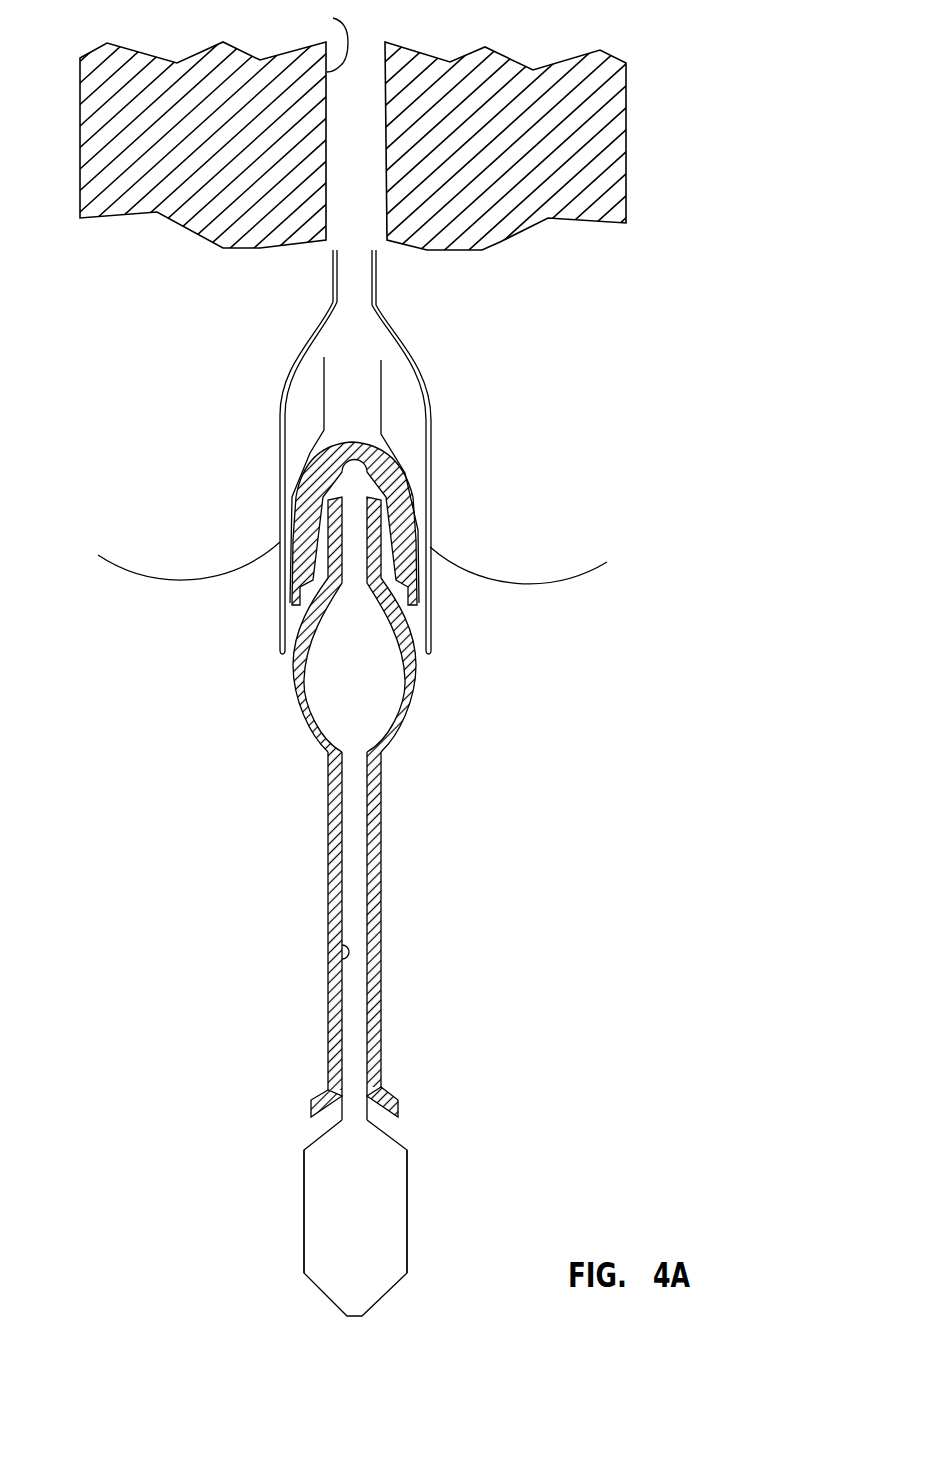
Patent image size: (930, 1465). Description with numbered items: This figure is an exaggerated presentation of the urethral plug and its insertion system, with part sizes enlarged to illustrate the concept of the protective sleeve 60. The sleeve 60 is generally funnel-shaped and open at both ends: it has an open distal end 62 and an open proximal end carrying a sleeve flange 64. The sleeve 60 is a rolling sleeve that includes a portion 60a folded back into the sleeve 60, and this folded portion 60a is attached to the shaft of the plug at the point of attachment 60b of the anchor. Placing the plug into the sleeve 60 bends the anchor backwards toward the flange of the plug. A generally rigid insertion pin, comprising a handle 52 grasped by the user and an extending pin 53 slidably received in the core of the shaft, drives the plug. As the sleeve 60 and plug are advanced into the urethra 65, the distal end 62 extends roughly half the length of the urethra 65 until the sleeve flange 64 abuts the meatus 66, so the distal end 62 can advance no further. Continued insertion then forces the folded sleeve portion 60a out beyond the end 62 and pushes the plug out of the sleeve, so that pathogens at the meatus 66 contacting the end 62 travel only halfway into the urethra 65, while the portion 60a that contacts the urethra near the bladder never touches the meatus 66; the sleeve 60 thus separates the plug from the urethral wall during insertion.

The handle 52 is at (408, 1215).
The extending pin 53 is at (374, 910).
The protective sleeve 60 is at (139, 586).
The folded sleeve portion 60a is at (303, 460).
The point of attachment 60b is at (324, 357).
The distal end 62 is at (377, 252).
The sleeve flange 64 is at (198, 582).
The urethra 65 is at (333, 18).
The meatus 66 is at (288, 250).